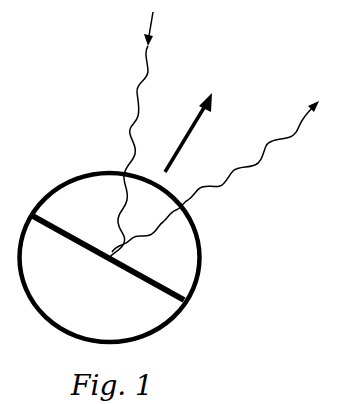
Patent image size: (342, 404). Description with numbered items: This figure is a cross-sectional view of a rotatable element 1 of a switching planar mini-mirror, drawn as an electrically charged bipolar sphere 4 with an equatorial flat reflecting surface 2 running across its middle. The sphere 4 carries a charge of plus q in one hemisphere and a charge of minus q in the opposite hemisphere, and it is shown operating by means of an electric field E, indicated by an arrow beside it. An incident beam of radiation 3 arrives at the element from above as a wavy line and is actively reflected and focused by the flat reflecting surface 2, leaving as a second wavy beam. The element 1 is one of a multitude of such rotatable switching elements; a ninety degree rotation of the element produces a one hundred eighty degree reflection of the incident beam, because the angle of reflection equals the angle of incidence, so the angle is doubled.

The rotatable element 1 is at (170, 177).
The equatorial flat reflecting surface 2 is at (78, 254).
The incident beam of radiation 3 is at (138, 91).
The electrically charged bipolar sphere 4 is at (182, 258).